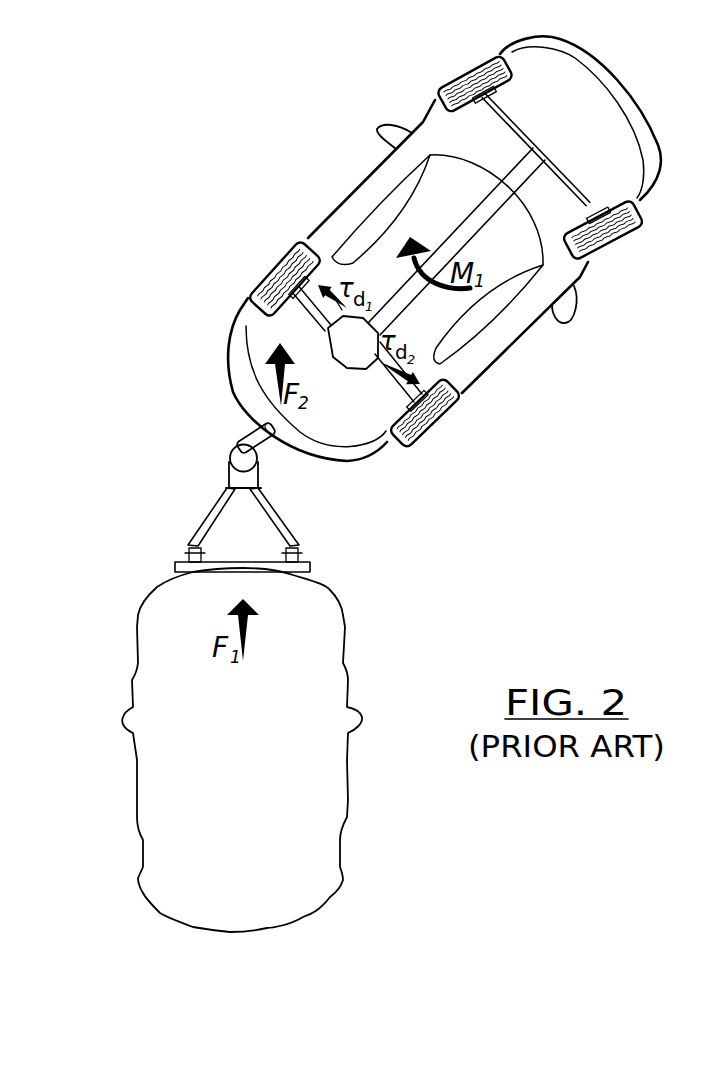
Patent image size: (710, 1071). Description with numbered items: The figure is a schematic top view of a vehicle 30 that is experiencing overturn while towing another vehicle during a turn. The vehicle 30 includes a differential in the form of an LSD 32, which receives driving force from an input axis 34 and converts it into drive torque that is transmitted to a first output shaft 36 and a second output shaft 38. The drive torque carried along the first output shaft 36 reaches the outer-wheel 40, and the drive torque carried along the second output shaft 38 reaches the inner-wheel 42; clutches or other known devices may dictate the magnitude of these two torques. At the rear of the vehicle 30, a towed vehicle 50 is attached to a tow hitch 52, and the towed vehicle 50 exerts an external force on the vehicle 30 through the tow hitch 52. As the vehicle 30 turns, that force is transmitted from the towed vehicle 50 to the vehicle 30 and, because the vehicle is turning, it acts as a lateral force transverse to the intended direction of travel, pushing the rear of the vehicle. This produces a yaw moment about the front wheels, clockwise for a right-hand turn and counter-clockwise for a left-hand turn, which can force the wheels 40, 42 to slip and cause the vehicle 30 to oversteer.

The vehicle 30 is at (317, 76).
The LSD 32 is at (356, 370).
The input axis 34 is at (437, 248).
The first output shaft 36 is at (247, 326).
The second output shaft 38 is at (410, 388).
The outer-wheel 40 is at (278, 261).
The inner-wheel 42 is at (438, 422).
The towed vehicle 50 is at (349, 757).
The tow hitch 52 is at (253, 430).